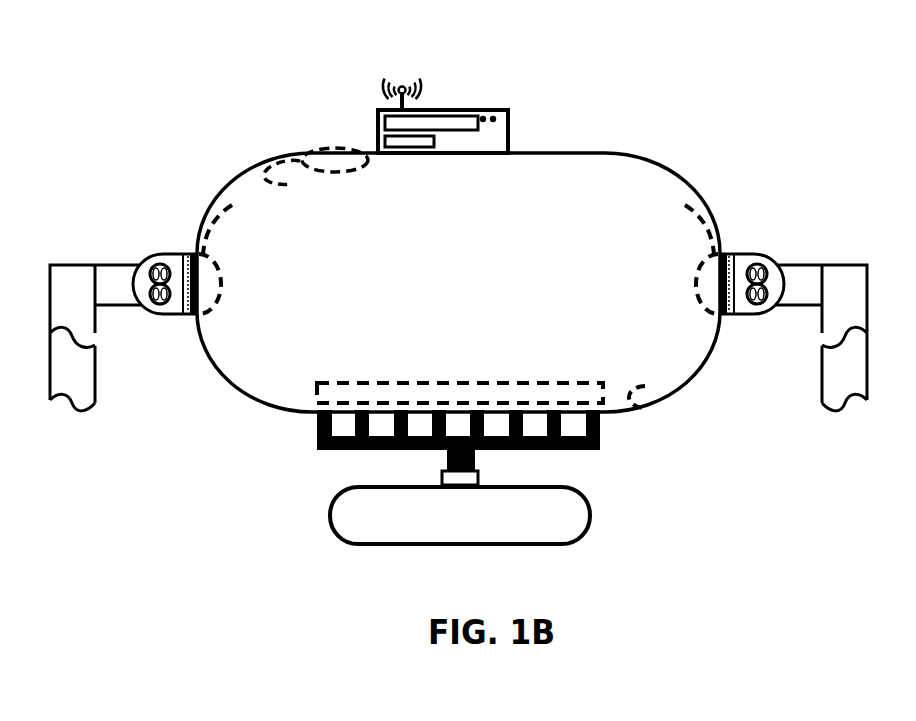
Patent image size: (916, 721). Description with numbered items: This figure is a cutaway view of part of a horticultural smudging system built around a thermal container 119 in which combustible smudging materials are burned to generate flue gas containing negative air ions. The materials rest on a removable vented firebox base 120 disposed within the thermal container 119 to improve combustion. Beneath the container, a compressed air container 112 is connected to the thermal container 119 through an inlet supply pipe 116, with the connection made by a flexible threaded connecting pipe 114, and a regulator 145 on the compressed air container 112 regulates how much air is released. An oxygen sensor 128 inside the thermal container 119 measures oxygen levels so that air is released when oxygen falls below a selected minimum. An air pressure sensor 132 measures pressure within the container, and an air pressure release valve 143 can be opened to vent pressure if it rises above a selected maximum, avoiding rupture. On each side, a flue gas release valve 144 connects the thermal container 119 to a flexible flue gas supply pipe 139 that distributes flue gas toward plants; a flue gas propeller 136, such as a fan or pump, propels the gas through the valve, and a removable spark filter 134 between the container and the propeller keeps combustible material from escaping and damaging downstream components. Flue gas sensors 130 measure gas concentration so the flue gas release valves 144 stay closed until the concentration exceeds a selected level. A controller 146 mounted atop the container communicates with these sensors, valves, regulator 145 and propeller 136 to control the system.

The compressed air container 112 is at (572, 522).
The flexible threaded connecting pipe 114 is at (447, 460).
The inlet supply pipe 116 is at (317, 430).
The thermal container 119 is at (541, 160).
The removable vented firebox base 120 is at (464, 382).
The oxygen sensor 128 is at (640, 410).
The flue gas sensor 130 is at (218, 216).
The air pressure sensor 132 is at (282, 155).
The removable spark filter 134 is at (194, 315).
The flue gas propeller 136 is at (162, 264).
The flexible flue gas supply pipe 139 is at (70, 284).
The air pressure release valve 143 is at (336, 152).
The flue gas release valve 144 is at (218, 286).
The regulator 145 is at (479, 477).
The controller 146 is at (401, 74).